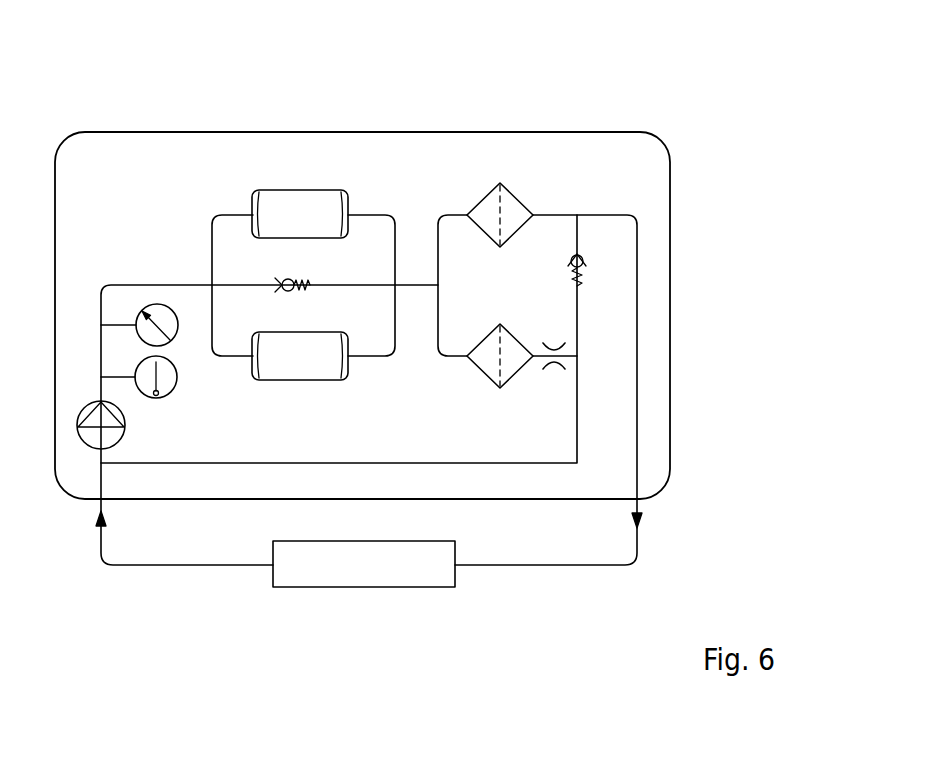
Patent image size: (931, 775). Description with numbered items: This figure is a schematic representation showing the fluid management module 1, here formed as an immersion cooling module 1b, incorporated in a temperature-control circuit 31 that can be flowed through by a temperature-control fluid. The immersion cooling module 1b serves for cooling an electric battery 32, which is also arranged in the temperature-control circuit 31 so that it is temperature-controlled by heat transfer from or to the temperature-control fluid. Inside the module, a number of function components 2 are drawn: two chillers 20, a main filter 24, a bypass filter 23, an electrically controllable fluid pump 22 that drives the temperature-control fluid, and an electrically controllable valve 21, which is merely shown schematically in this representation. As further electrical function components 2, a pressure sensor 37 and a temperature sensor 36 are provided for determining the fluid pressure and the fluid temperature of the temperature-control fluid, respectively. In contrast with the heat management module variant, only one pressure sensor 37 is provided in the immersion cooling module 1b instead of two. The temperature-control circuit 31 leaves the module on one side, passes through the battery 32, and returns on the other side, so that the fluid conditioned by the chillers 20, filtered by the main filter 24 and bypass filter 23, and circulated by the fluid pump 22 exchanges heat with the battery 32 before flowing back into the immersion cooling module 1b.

The fluid management module 1 is at (435, 272).
The immersion cooling module 1b is at (719, 175).
The function components 2 is at (321, 346).
The chiller 20 is at (350, 200).
The electrically controllable valve 21 is at (556, 372).
The electrically controllable fluid pump 22 is at (126, 424).
The bypass filter 23 is at (516, 340).
The main filter 24 is at (518, 198).
The temperature-control circuit 31 is at (638, 388).
The electric battery 32 is at (366, 590).
The temperature sensor 36 is at (178, 385).
The pressure sensor 37 is at (157, 304).